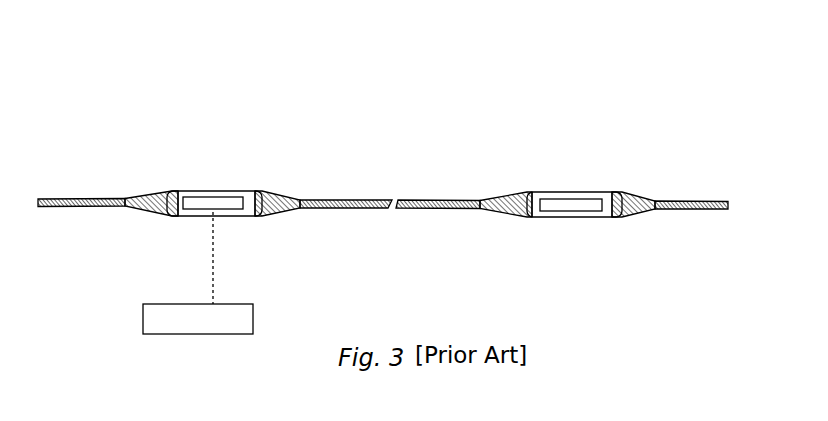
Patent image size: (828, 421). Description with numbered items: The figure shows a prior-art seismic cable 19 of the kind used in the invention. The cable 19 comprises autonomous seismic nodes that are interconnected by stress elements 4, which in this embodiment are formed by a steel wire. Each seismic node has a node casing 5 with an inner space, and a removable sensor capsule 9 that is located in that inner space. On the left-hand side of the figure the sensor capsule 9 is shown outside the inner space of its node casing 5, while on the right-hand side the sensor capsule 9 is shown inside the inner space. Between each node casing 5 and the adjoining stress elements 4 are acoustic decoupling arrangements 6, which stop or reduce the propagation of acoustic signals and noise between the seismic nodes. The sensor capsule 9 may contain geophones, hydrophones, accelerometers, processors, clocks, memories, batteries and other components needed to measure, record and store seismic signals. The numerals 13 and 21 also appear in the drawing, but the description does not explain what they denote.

The stress element 4 is at (112, 198).
The node casing 5 is at (192, 217).
The acoustic decoupling arrangement 6 is at (173, 193).
The sensor capsule 9 is at (183, 334).
The sensor 13 is at (244, 217).
The seismic cable 19 is at (352, 128).
The sensor unit 21 is at (204, 150).